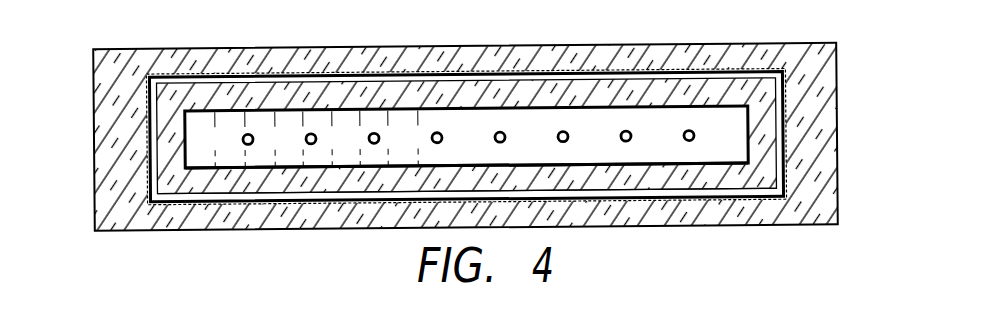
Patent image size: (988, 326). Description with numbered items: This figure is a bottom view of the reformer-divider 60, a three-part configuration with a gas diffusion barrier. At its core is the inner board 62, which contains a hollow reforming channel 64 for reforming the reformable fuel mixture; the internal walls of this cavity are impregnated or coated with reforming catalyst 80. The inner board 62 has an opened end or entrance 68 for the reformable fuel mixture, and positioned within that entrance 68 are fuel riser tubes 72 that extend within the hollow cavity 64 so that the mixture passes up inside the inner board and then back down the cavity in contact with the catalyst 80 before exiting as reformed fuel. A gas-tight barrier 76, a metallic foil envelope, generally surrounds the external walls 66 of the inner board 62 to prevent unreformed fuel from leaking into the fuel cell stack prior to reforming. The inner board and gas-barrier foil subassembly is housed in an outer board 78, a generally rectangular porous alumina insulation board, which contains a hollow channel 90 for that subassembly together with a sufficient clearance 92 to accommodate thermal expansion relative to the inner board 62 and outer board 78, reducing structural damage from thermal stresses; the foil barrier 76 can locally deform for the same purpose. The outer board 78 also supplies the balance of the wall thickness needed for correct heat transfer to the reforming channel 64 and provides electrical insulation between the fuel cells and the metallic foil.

The reformer-divider 60 is at (459, 130).
The inner board 62 is at (763, 120).
The hollow reforming channel 64 is at (787, 108).
The external walls 66 is at (778, 174).
The opened end or entrance 68 is at (200, 150).
The fuel riser tubes 72 is at (556, 131).
The gas-tight barrier 76 is at (727, 137).
The outer board 78 is at (837, 200).
The reforming catalyst 80 is at (700, 157).
The hollow channel 90 is at (155, 120).
The clearance 92 is at (192, 78).